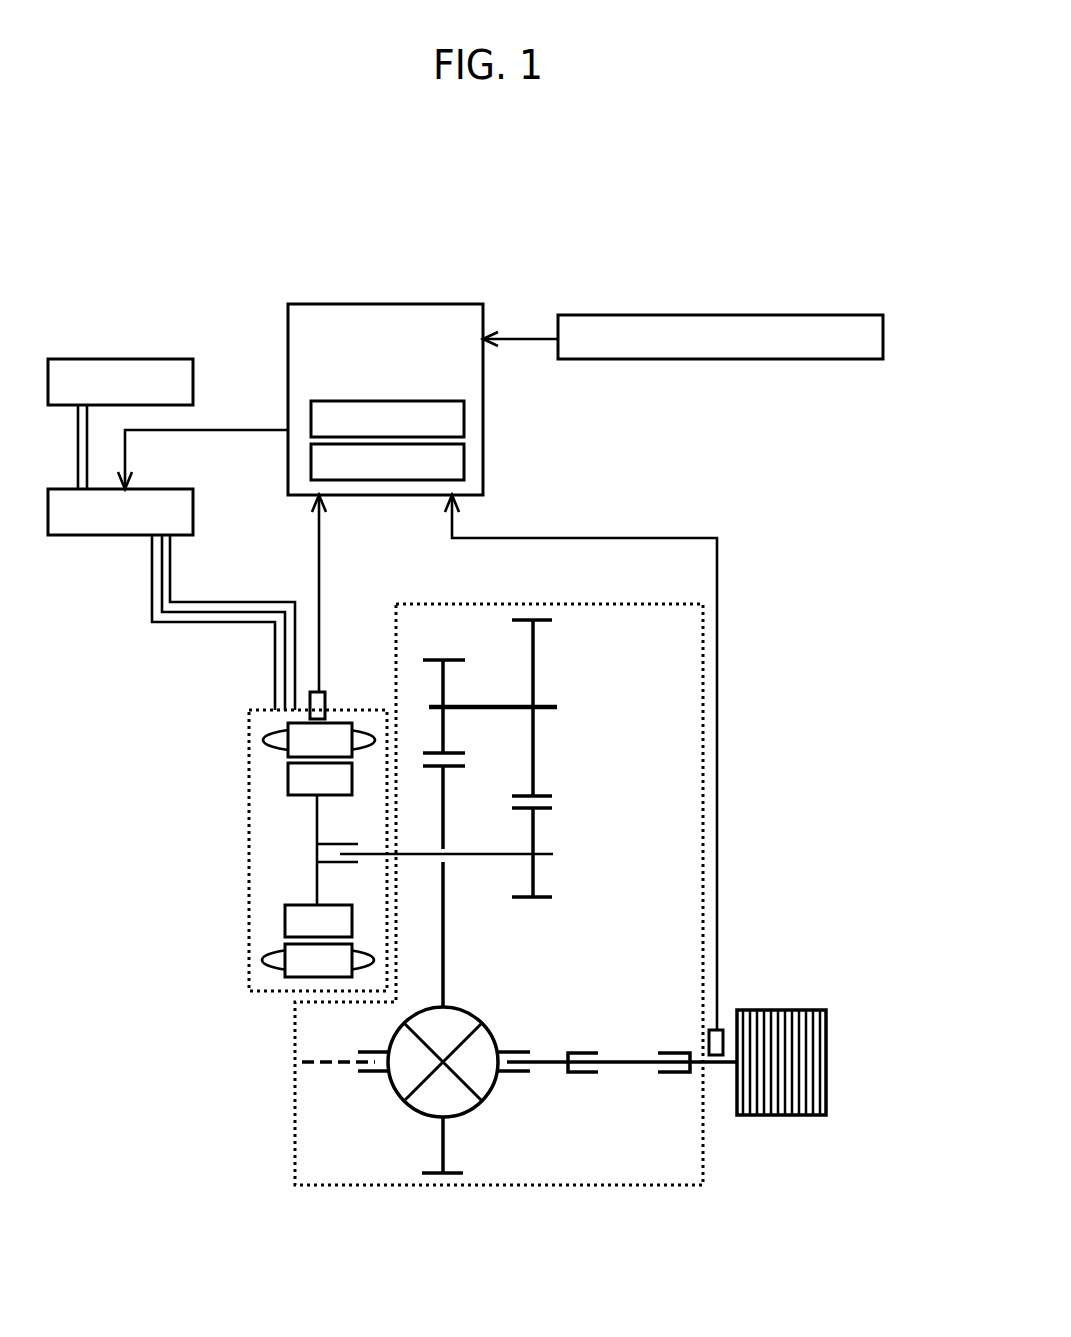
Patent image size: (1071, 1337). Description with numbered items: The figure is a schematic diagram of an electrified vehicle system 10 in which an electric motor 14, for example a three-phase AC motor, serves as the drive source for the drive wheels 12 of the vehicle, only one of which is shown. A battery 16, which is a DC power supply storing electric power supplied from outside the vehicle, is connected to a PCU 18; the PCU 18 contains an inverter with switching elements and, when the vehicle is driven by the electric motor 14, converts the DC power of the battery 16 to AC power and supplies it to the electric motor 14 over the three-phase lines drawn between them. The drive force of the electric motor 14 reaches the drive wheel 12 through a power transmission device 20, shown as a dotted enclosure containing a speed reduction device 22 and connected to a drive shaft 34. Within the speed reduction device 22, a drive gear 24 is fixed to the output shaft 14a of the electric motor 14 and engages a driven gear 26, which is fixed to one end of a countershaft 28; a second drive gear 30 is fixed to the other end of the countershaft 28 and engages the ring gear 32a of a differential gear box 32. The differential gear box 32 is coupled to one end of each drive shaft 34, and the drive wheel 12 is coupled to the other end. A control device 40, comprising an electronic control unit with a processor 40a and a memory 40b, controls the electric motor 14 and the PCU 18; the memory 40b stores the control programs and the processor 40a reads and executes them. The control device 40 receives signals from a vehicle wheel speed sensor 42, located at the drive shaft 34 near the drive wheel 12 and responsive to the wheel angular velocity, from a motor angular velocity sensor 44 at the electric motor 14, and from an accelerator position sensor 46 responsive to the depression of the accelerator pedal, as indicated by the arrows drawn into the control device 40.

The electrified vehicle system 10 is at (825, 207).
The drive wheel 12 is at (790, 1010).
The electric motor 14 is at (368, 826).
The output shaft 14a is at (374, 852).
The battery 16 is at (165, 359).
The PCU 18 is at (165, 489).
The power transmission device 20 is at (594, 593).
The speed reduction device 22 is at (553, 762).
The drive gear 24 is at (535, 840).
The driven gear 26 is at (533, 775).
The countershaft 28 is at (495, 708).
The drive gear 30 is at (445, 688).
The differential gear box 32 is at (483, 1013).
The ring gear 32a is at (445, 957).
The drive shaft 34 is at (610, 1060).
The control device 40 is at (436, 370).
The processor 40a is at (466, 421).
The memory 40b is at (466, 468).
The vehicle wheel speed sensor 42 is at (718, 1030).
The motor angular velocity sensor 44 is at (320, 692).
The accelerator position sensor 46 is at (820, 315).